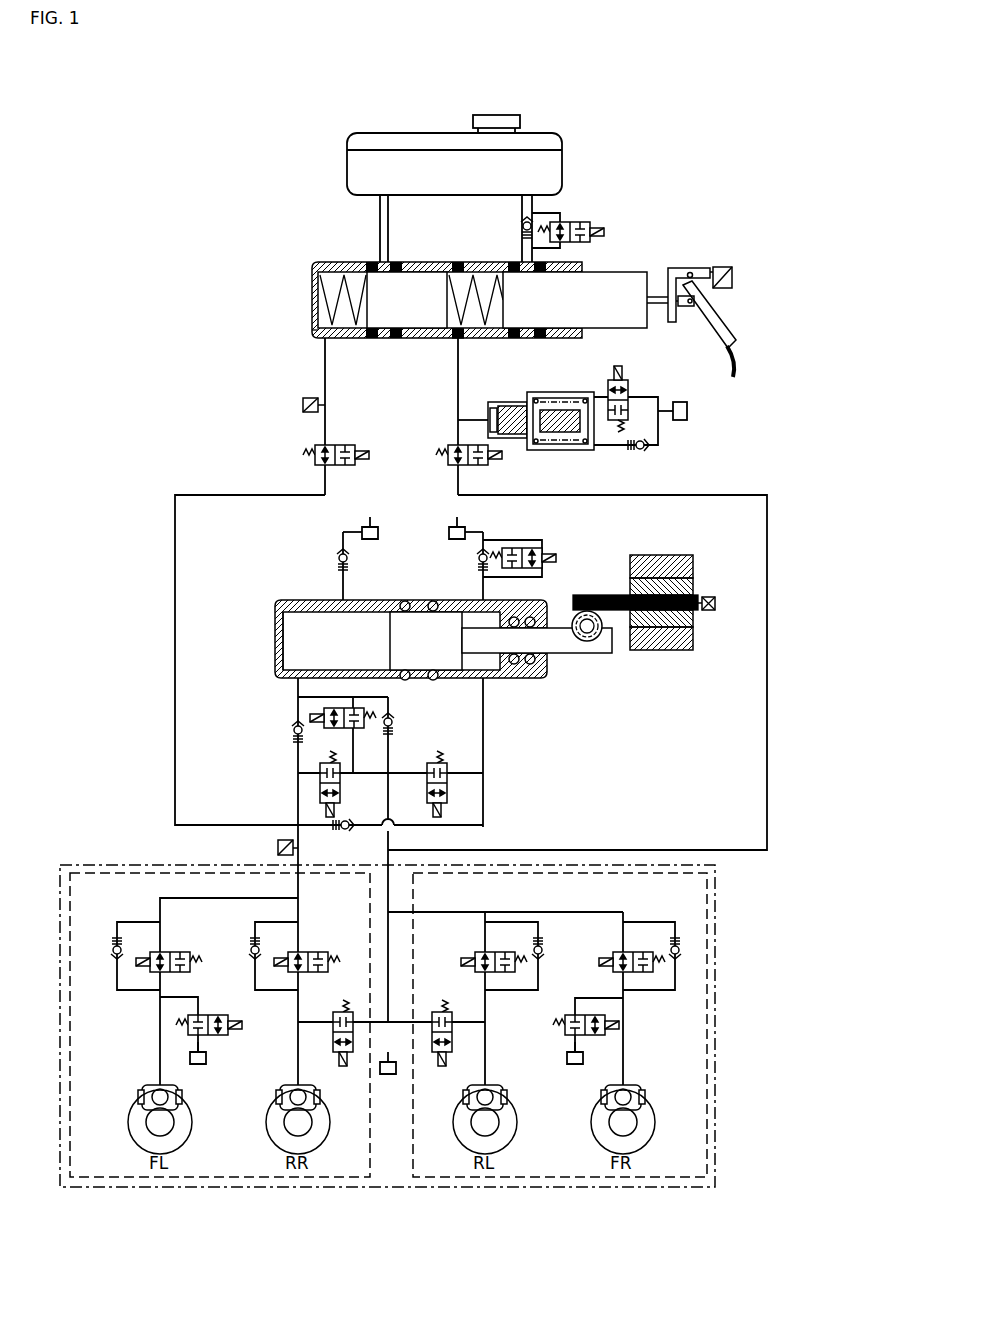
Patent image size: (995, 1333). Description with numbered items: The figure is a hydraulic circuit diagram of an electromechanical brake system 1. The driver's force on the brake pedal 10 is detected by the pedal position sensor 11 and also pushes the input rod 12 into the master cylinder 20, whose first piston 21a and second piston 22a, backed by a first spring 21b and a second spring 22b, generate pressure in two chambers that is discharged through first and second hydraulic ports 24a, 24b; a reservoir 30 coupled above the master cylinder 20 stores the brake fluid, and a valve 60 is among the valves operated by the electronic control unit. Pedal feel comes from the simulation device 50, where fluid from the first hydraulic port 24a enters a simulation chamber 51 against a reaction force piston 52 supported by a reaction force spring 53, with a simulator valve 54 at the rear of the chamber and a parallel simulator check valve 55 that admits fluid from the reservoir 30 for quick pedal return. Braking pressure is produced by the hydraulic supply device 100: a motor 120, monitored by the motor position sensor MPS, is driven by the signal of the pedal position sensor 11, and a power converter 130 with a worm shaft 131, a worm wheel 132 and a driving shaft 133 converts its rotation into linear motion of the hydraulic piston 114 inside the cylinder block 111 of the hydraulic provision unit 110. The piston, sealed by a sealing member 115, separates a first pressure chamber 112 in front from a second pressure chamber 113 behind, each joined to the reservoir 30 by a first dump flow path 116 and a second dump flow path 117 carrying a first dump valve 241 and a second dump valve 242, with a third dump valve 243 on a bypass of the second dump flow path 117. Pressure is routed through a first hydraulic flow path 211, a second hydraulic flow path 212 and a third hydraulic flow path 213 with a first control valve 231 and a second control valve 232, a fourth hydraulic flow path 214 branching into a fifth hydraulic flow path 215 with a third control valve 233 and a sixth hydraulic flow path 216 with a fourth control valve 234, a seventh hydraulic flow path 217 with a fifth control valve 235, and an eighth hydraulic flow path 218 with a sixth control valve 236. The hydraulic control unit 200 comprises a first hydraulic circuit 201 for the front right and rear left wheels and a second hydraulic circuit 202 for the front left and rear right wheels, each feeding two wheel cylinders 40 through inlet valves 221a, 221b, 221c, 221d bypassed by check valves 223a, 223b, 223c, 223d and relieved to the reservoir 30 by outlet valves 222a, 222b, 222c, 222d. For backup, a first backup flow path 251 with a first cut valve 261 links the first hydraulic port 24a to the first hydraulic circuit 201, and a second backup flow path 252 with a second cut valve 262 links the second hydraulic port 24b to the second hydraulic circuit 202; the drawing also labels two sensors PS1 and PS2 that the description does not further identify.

The electromechanical brake system 1 is at (263, 131).
The brake pedal 10 is at (713, 322).
The pedal position sensor 11 is at (730, 271).
The input rod 12 is at (657, 296).
The master cylinder 20 is at (312, 279).
The first piston 21a is at (617, 282).
The first spring 21b is at (485, 320).
The second piston 22a is at (418, 285).
The second spring 22b is at (322, 299).
The first hydraulic port 24a is at (456, 340).
The second hydraulic port 24b is at (318, 336).
The reservoir 30 is at (379, 133).
The wheel cylinder 40 is at (178, 1102).
The simulation device 50 is at (564, 420).
The simulation chamber 51 is at (562, 392).
The reaction force piston 52 is at (512, 402).
The reaction force spring 53 is at (544, 392).
The simulator valve 54 is at (628, 378).
The simulator check valve 55 is at (642, 452).
The valve 60 is at (595, 222).
The hydraulic supply device 100 is at (262, 560).
The hydraulic provision unit 110 is at (392, 627).
The cylinder block 111 is at (280, 630).
The first pressure chamber 112 is at (296, 645).
The second pressure chamber 113 is at (497, 658).
The hydraulic piston 114 is at (447, 628).
The sealing member 115 is at (403, 600).
The first dump flow path 116 is at (343, 584).
The second dump flow path 117 is at (483, 590).
The motor 120 is at (686, 557).
The power converter 130 is at (606, 593).
The worm shaft 131 is at (577, 595).
The worm wheel 132 is at (604, 638).
The driving shaft 133 is at (605, 658).
The motor position sensor MPS is at (709, 597).
The hydraulic control unit 200 is at (475, 1232).
The first hydraulic circuit 201 is at (463, 1188).
The second hydraulic circuit 202 is at (335, 1188).
The first hydraulic flow path 211 is at (298, 691).
The second hydraulic flow path 212 is at (388, 697).
The third hydraulic flow path 213 is at (298, 757).
The fourth hydraulic flow path 214 is at (483, 702).
The fifth hydraulic flow path 215 is at (483, 773).
The sixth hydraulic flow path 216 is at (483, 827).
The seventh hydraulic flow path 217 is at (372, 773).
The eighth hydraulic flow path 218 is at (353, 737).
The inlet valve 221a is at (636, 952).
The inlet valve 221b is at (495, 952).
The inlet valve 221c is at (320, 952).
The inlet valve 221d is at (182, 952).
The outlet valve 222a is at (555, 1023).
The outlet valve 222b is at (445, 1003).
The outlet valve 222c is at (345, 1003).
The outlet valve 222d is at (226, 1030).
The check valve 223a is at (681, 957).
The check valve 223b is at (543, 964).
The check valve 223c is at (253, 960).
The check valve 223d is at (117, 935).
The first control valve 231 is at (392, 725).
The second control valve 232 is at (292, 732).
The third control valve 233 is at (440, 763).
The fourth control valve 234 is at (346, 833).
The fifth control valve 235 is at (320, 792).
The sixth control valve 236 is at (310, 712).
The first dump valve 241 is at (340, 548).
The second dump valve 242 is at (485, 548).
The third dump valve 243 is at (535, 548).
The first backup flow path 251 is at (458, 380).
The second backup flow path 252 is at (325, 380).
The first cut valve 261 is at (445, 451).
The second cut valve 262 is at (306, 454).
The first pressure sensor PS1 is at (278, 848).
The second pressure sensor PS2 is at (303, 405).